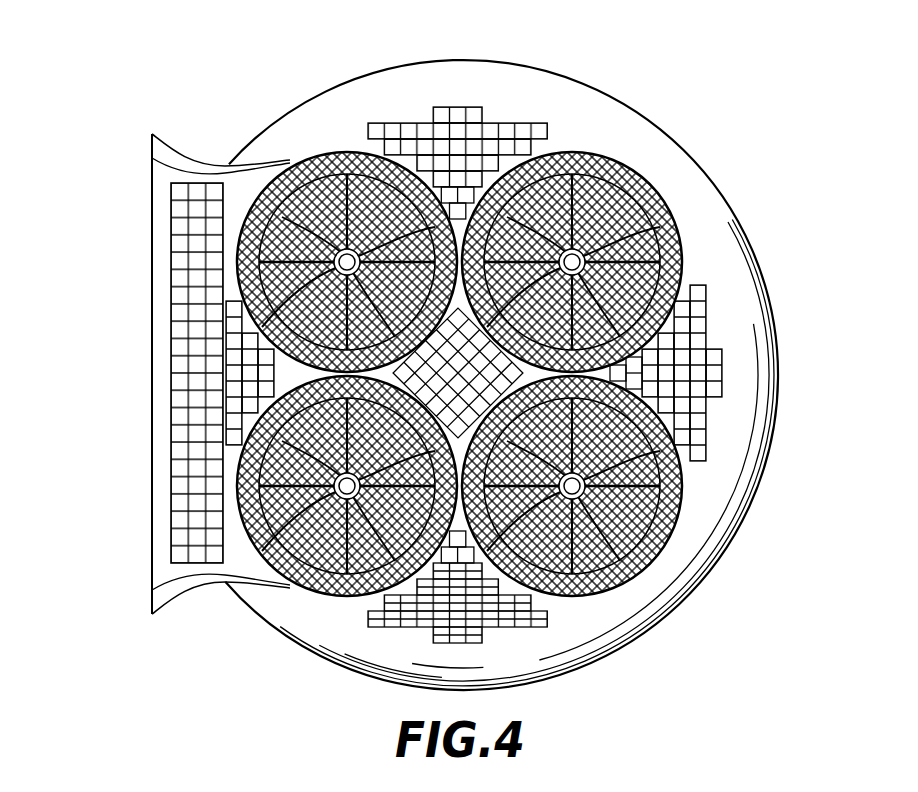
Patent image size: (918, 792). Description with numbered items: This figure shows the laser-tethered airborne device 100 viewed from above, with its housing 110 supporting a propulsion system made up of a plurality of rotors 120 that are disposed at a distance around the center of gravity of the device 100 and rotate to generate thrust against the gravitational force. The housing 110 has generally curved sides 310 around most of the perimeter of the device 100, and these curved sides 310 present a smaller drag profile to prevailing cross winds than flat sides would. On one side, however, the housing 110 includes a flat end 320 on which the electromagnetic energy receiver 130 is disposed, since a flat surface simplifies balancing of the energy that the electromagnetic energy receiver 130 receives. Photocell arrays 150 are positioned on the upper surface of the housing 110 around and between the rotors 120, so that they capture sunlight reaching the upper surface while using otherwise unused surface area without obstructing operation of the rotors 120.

The laser-tethered airborne device 100 is at (445, 349).
The housing 110 is at (775, 333).
The rotors 120 is at (665, 525).
The electromagnetic energy receiver 130 is at (148, 333).
The photocell array 150 is at (477, 112).
The curved sides 310 is at (317, 92).
The flat end 320 is at (137, 215).